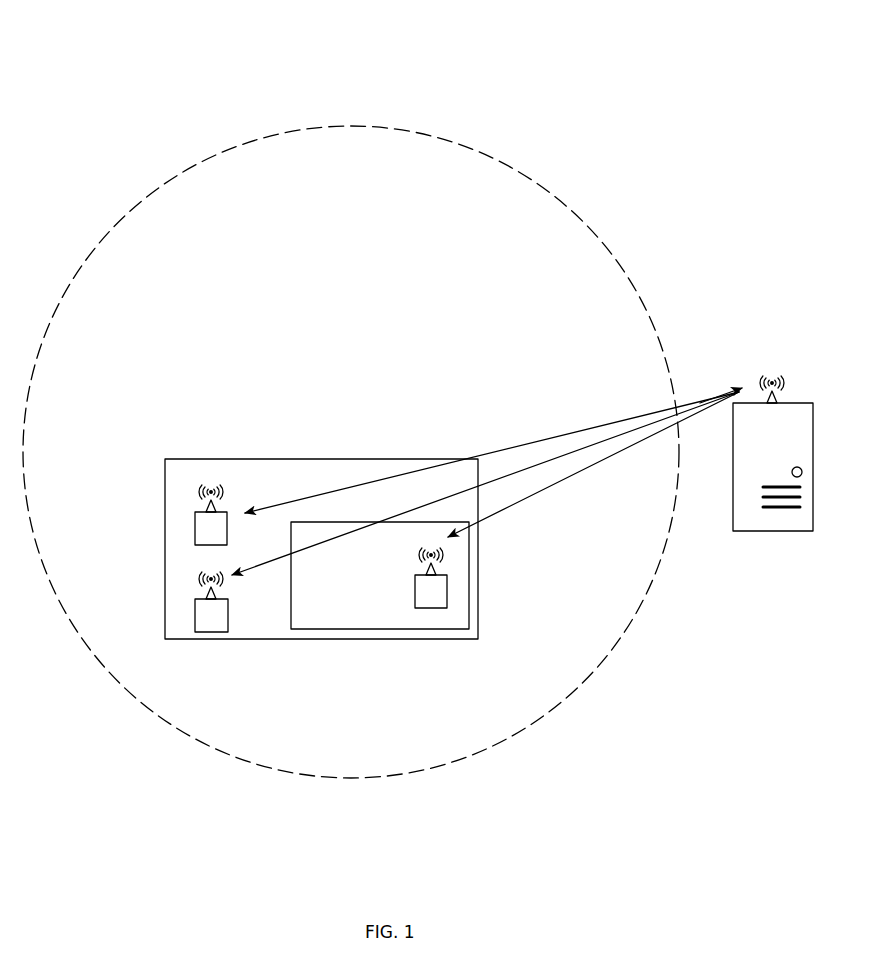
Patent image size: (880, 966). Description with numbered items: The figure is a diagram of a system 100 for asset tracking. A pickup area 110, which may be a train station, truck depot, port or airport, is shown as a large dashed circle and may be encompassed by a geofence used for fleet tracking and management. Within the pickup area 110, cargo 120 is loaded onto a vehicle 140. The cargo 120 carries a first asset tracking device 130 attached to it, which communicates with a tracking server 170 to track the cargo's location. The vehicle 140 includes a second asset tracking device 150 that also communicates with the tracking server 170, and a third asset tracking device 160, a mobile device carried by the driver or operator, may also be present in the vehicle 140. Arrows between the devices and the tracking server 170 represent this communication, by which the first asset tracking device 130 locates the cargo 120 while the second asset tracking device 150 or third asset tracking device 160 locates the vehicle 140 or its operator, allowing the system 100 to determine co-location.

The system for asset tracking 100 is at (77, 78).
The pickup area 110 is at (362, 126).
The cargo 120 is at (291, 617).
The first asset tracking device 130 is at (415, 592).
The vehicle 140 is at (222, 459).
The second asset tracking device 150 is at (195, 613).
The third asset tracking device 160 is at (195, 528).
The tracking server 170 is at (733, 483).